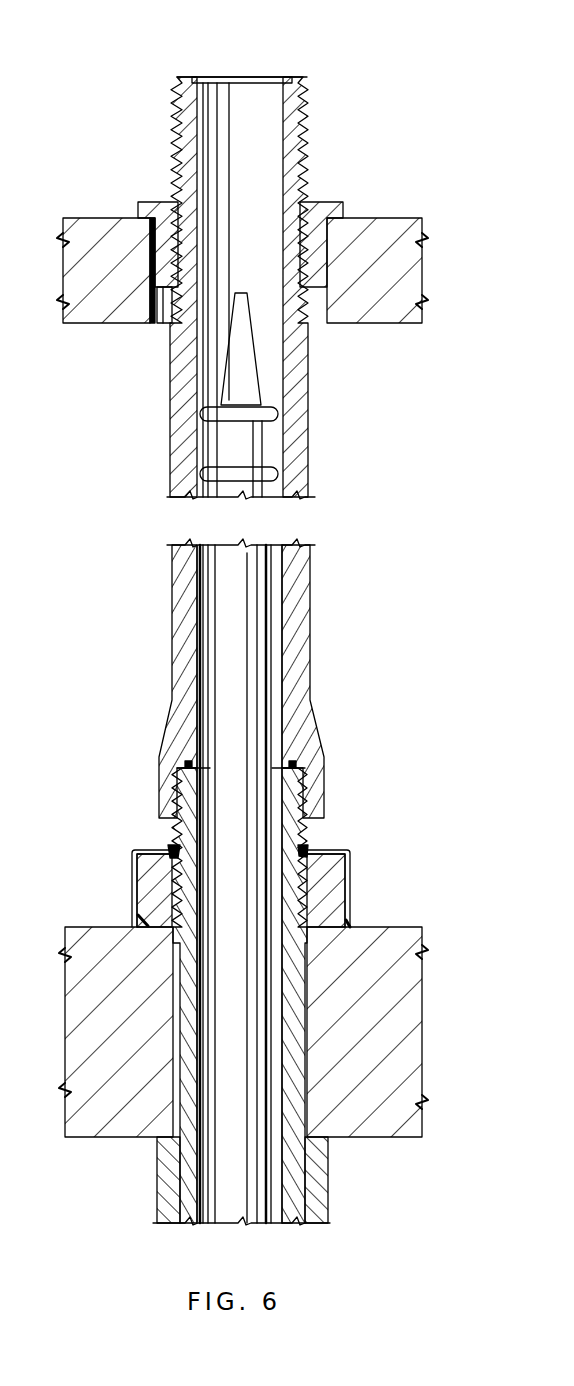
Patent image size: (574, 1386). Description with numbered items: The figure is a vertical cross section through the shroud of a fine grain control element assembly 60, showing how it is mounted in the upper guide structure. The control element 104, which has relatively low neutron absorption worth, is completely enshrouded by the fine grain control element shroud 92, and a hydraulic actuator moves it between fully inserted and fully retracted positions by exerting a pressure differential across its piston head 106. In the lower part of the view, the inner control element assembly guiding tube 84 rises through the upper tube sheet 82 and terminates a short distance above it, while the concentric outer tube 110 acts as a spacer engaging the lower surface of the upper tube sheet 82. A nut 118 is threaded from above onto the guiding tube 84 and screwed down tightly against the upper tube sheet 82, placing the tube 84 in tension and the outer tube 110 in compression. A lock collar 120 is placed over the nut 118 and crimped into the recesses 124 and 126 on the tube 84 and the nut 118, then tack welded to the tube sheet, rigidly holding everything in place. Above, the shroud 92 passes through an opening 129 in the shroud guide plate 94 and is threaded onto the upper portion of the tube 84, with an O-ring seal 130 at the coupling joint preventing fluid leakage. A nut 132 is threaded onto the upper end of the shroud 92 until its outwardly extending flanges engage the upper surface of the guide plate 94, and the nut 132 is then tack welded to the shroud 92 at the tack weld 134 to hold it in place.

The fine grain control element assembly 60 is at (285, 562).
The upper tube sheet 82 is at (85, 931).
The control element assembly guiding tube 84 is at (295, 1198).
The fine grain control element shroud 92 is at (182, 580).
The shroud guide plate 94 is at (93, 230).
The control element 104 is at (248, 647).
The piston head 106 is at (263, 450).
The concentric outer tube 110 is at (317, 1157).
The nut 118 is at (330, 903).
The lock collar 120 is at (350, 877).
The recess 124 is at (303, 850).
The recess 126 is at (140, 918).
The opening 129 is at (163, 325).
The O-ring seal 130 is at (293, 762).
The nut 132 is at (323, 207).
The tack weld 134 is at (175, 197).